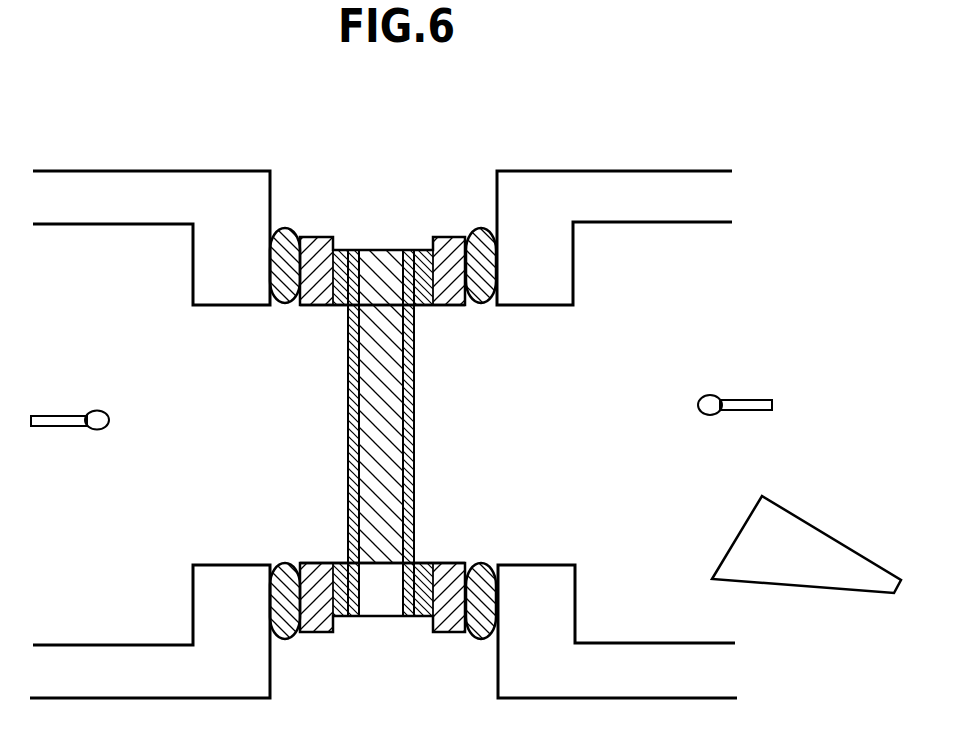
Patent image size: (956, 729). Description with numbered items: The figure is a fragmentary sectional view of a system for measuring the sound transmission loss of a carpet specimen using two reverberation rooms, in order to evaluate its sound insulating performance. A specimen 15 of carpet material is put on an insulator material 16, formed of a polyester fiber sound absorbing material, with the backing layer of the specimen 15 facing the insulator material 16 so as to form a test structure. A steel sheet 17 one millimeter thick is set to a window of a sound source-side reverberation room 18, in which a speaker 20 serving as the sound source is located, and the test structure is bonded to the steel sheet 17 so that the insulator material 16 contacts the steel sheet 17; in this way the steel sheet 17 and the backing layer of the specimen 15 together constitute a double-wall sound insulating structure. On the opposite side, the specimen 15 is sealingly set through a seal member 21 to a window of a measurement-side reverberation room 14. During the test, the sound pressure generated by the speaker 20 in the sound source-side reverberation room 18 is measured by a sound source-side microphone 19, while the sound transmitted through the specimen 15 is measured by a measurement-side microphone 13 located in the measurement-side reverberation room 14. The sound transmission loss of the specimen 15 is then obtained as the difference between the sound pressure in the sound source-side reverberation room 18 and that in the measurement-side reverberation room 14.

The measurement-side microphone 13 is at (98, 410).
The measurement-side reverberation room 14 is at (113, 226).
The specimen 15 is at (353, 250).
The insulator material 16 is at (381, 312).
The steel sheet 17 is at (410, 250).
The sound source-side reverberation room 18 is at (653, 224).
The sound source-side microphone 19 is at (712, 394).
The speaker 20 is at (732, 540).
The seal member 21 is at (290, 640).